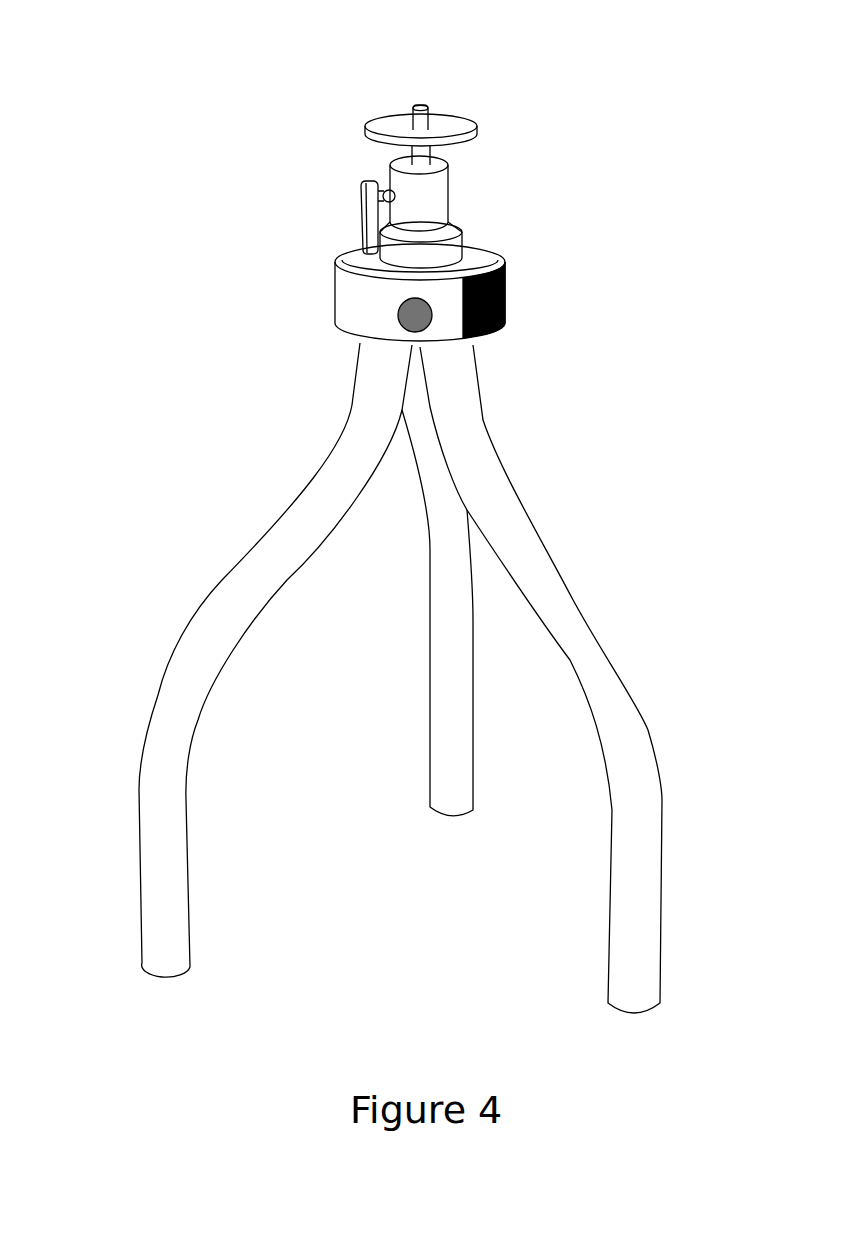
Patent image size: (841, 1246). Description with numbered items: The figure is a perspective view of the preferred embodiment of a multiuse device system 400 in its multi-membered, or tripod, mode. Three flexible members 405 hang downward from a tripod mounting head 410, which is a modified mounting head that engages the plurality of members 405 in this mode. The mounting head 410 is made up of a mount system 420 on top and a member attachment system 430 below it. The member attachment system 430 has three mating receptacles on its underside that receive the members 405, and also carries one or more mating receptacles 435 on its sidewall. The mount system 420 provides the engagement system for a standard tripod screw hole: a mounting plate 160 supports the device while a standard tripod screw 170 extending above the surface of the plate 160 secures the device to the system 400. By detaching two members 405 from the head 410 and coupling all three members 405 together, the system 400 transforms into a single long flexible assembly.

The multiuse device system 400 is at (180, 97).
The flexible member 405 is at (148, 655).
The tripod mounting head 410 is at (253, 372).
The mount system 420 is at (313, 113).
The member attachment system 430 is at (528, 311).
The mating receptacle 435 is at (398, 312).
The mounting plate 160 is at (480, 128).
The tripod screw 170 is at (421, 103).